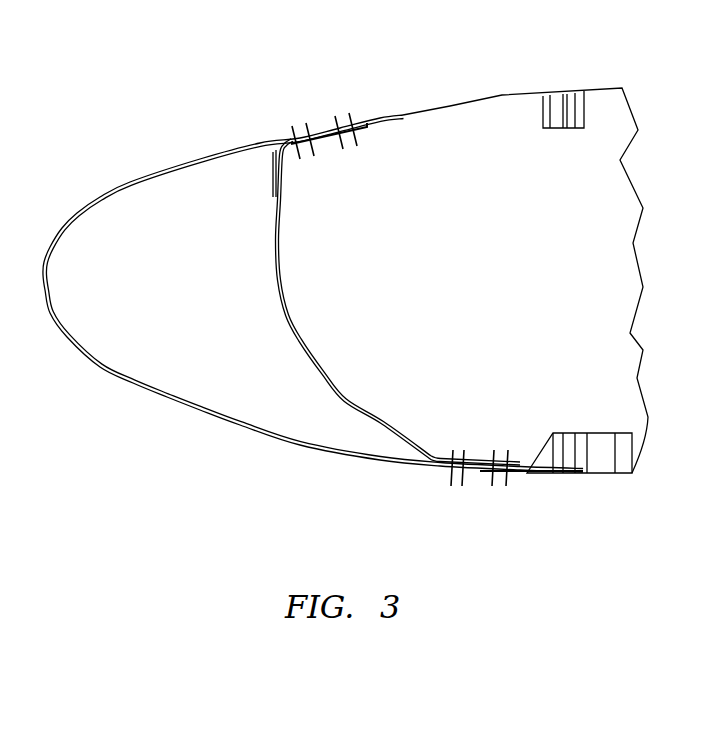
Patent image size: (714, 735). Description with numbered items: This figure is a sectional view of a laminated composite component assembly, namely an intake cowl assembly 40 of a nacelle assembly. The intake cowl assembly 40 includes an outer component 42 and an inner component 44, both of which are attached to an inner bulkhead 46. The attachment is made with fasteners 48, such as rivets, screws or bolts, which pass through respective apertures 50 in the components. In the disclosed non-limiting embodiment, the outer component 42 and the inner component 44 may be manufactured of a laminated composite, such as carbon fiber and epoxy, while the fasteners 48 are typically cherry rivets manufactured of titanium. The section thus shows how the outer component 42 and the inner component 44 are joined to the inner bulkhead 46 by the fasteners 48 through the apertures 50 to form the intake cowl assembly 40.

The intake cowl assembly 40 is at (218, 112).
The outer component 42 is at (498, 98).
The inner component 44 is at (573, 475).
The inner bulkhead 46 is at (306, 351).
The fasteners 48 is at (314, 110).
The apertures 50 is at (352, 118).